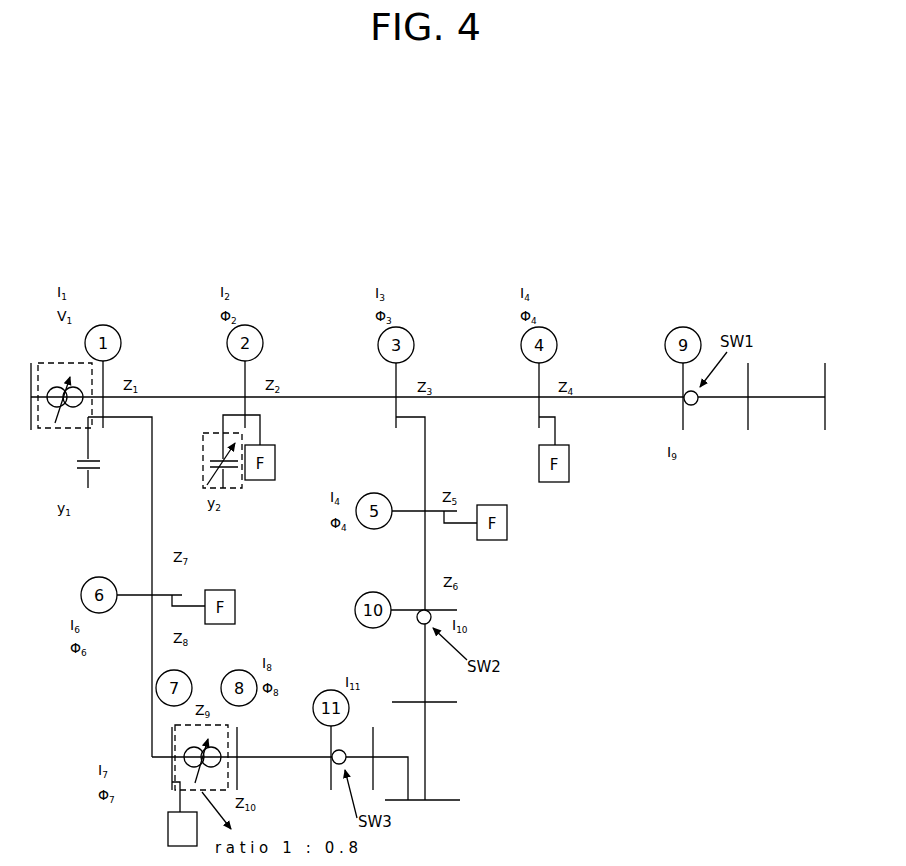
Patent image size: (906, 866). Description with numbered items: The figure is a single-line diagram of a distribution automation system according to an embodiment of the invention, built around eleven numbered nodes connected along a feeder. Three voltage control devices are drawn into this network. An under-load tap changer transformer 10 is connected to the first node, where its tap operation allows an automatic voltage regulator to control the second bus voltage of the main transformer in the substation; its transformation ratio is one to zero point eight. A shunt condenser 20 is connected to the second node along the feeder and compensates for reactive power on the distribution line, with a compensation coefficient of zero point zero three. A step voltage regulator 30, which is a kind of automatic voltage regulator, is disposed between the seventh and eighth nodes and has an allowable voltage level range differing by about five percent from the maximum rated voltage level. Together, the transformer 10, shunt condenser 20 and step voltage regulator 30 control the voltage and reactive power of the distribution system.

The under-load tap changer transformer 10 is at (53, 428).
The shunt condenser 20 is at (238, 488).
The step voltage regulator 30 is at (177, 790).